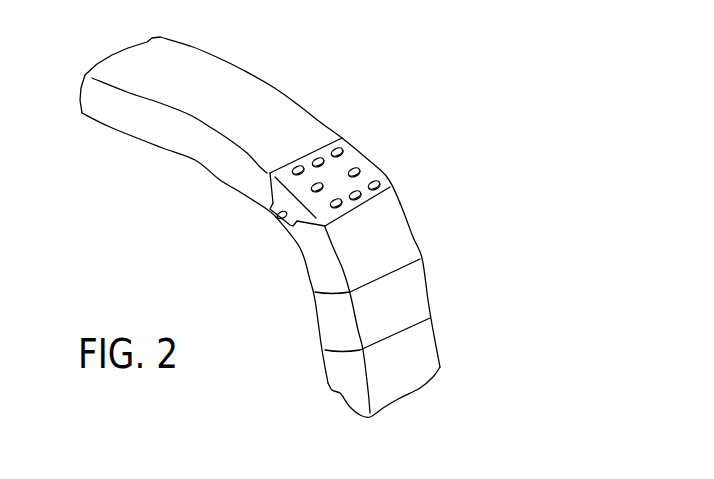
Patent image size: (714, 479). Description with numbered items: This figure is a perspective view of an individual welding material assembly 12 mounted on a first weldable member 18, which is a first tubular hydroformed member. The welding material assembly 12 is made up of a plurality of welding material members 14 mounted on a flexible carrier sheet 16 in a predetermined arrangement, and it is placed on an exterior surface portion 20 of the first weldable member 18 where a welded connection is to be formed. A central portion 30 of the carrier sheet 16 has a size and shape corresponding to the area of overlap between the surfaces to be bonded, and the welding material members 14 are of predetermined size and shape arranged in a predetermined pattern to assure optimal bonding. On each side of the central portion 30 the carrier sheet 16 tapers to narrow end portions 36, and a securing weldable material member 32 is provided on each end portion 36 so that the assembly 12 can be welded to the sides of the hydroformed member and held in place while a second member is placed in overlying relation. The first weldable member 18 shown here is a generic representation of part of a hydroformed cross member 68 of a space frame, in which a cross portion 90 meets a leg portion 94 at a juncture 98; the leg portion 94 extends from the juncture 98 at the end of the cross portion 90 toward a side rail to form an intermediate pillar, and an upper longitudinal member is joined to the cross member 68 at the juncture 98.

The welding material assembly 12 is at (410, 153).
The welding material member 14 is at (340, 148).
The flexible carrier sheet 16 is at (388, 183).
The first weldable member 18 is at (476, 307).
The exterior surface portion 20 is at (382, 212).
The central portion 30 is at (288, 177).
The securing weldable material member 32 is at (273, 223).
The narrow end portion 36 is at (267, 213).
The hydroformed cross member 68 is at (240, 73).
The cross portion 90 is at (197, 66).
The leg portion 94 is at (410, 375).
The juncture 98 is at (362, 228).